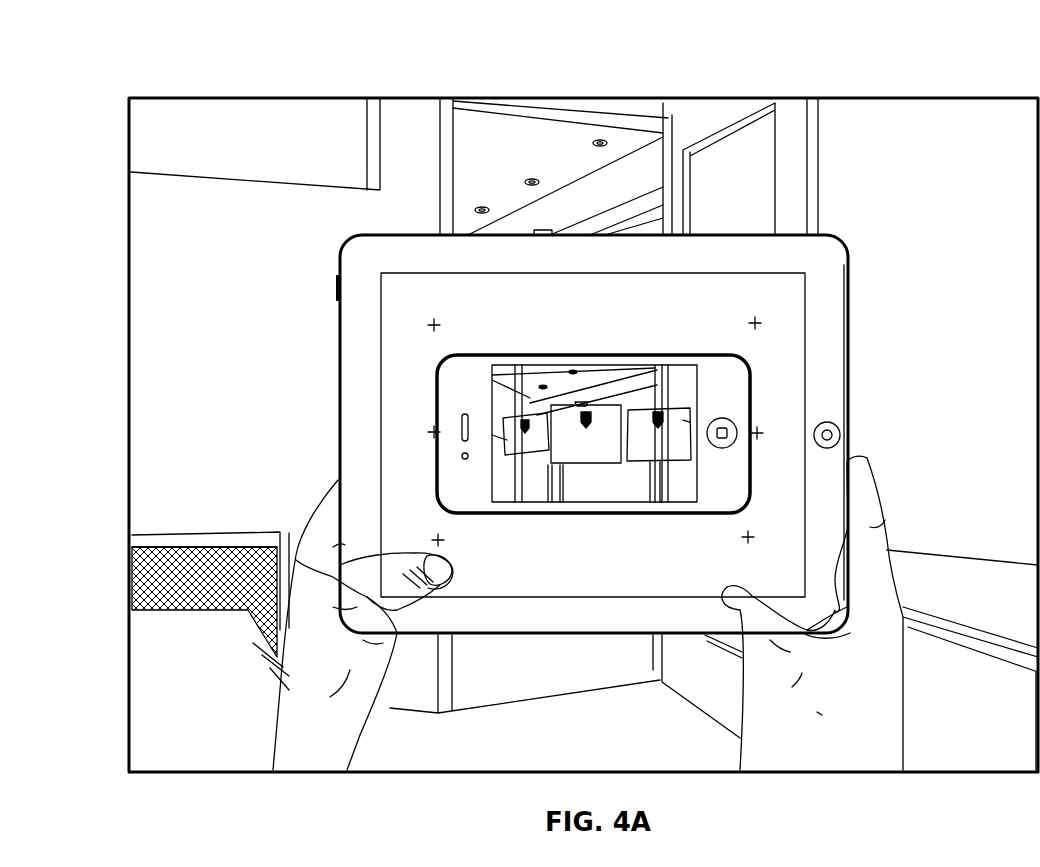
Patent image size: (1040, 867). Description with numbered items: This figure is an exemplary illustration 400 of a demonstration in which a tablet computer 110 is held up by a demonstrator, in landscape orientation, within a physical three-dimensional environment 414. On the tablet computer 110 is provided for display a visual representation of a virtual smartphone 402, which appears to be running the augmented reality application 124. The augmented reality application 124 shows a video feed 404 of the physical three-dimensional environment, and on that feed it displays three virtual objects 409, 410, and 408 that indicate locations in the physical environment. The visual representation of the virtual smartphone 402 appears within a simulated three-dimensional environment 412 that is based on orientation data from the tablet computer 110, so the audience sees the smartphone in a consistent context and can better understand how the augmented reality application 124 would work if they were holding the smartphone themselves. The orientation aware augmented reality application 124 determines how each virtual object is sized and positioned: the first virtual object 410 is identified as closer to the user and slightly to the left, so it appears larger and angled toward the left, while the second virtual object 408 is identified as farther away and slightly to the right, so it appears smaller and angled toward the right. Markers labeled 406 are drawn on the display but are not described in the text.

The exemplary illustration 400 is at (132, 44).
The tablet computer 110 is at (858, 307).
The simulated three-dimensional environment 412 is at (427, 282).
The virtual smartphone 402 is at (639, 343).
The video feed 404 is at (500, 380).
The augmented reality application 124 is at (620, 386).
The registration markers 406 is at (758, 436).
The second virtual object 408 is at (683, 420).
The virtual object 409 is at (503, 437).
The first virtual object 410 is at (524, 413).
The physical three-dimensional environment 414 is at (906, 169).